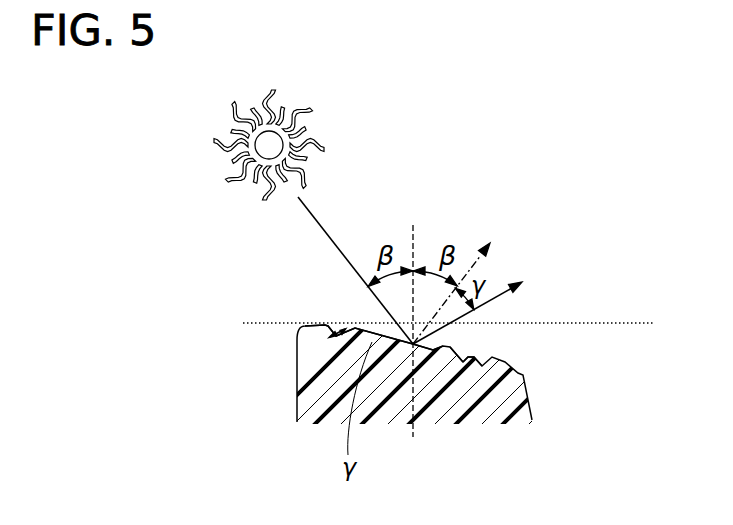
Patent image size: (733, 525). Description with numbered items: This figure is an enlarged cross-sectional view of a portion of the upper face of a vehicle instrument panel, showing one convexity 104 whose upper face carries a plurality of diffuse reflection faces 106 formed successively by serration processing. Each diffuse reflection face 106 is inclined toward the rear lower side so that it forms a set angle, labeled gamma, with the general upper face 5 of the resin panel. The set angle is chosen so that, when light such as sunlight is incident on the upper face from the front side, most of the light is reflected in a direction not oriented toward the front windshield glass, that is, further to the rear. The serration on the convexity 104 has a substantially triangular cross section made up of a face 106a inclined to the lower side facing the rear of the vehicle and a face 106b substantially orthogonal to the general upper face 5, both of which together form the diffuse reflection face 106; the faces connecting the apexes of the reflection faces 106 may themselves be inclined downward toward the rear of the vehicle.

The general upper face 5 is at (448, 283).
The convexity 104 is at (458, 365).
The diffuse reflection face 106 is at (434, 371).
The face inclined to the lower side facing the rear side of the vehicle 106a is at (498, 315).
The face substantially orthogonal to the general upper face 106b is at (486, 414).